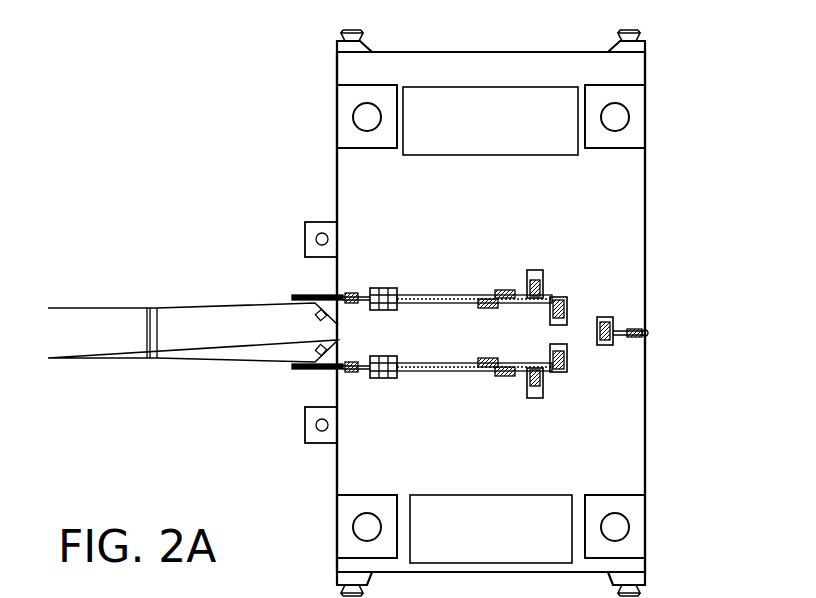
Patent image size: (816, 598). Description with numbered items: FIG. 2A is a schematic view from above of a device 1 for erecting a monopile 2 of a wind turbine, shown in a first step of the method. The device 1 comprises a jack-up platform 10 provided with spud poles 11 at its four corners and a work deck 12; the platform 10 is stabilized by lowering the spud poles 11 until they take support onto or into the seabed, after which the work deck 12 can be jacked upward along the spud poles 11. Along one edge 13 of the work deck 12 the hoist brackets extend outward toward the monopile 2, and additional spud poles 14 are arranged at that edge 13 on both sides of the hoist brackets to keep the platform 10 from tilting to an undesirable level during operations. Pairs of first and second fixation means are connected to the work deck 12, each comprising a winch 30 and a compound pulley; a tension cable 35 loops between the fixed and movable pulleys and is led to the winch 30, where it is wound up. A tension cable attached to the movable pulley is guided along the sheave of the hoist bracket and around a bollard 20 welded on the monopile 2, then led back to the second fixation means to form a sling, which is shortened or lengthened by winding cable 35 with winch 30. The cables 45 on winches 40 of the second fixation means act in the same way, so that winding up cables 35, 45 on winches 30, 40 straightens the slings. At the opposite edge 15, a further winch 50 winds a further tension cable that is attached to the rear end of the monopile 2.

The device 1 is at (265, 52).
The monopile 2 is at (84, 300).
The jack-up platform 10 is at (650, 247).
The spud poles 11 is at (367, 117).
The work deck 12 is at (494, 194).
The edge 13 is at (332, 172).
The additional spud pole 14 is at (317, 426).
The edge 15 is at (650, 172).
The bollard 20 is at (300, 369).
The winch 30 is at (535, 398).
The tension cable 35 is at (423, 372).
The winch 40 is at (560, 372).
The cable 45 is at (468, 372).
The winch 50 is at (605, 317).